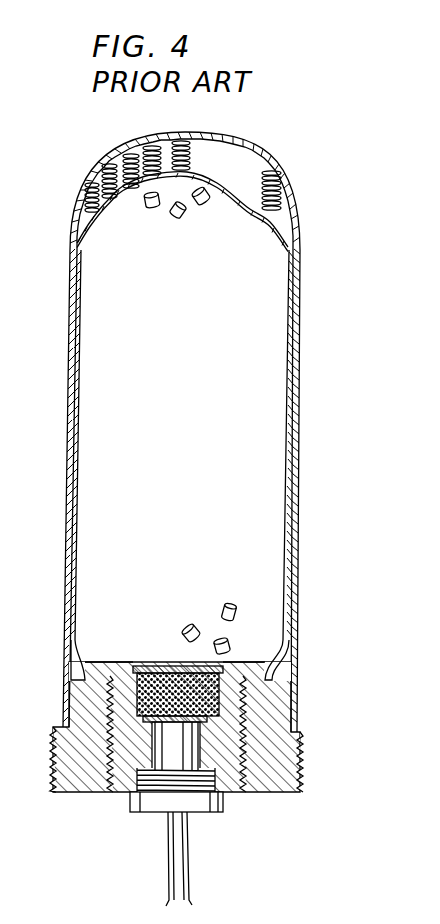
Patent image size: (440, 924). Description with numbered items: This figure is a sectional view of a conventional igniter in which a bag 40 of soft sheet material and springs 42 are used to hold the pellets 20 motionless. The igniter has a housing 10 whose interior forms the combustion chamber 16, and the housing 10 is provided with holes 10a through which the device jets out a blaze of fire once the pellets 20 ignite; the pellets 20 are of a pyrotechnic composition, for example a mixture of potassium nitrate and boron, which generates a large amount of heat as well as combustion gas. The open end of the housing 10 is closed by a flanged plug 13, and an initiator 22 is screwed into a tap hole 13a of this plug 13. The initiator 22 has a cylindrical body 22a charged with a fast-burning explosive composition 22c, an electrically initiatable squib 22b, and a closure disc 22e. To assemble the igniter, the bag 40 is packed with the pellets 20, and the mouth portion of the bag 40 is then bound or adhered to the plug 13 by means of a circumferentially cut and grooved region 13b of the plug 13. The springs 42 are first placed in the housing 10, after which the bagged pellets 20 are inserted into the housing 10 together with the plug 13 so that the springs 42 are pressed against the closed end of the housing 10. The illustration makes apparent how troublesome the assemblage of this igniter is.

The housing 10 is at (63, 601).
The holes 10a is at (68, 391).
The flanged plug 13 is at (64, 724).
The tap hole 13a is at (252, 762).
The circumferentially cut and grooved region 13b is at (287, 628).
The combustion chamber 16 is at (195, 449).
The pellets 20 is at (188, 213).
The initiator 22 is at (233, 792).
The cylindrical body 22a is at (232, 716).
The electrically initiatable squib 22b is at (183, 757).
The fast-burning explosive composition 22c is at (108, 708).
The closure disc 22e is at (152, 668).
The bag 40 is at (103, 207).
The springs 42 is at (113, 166).